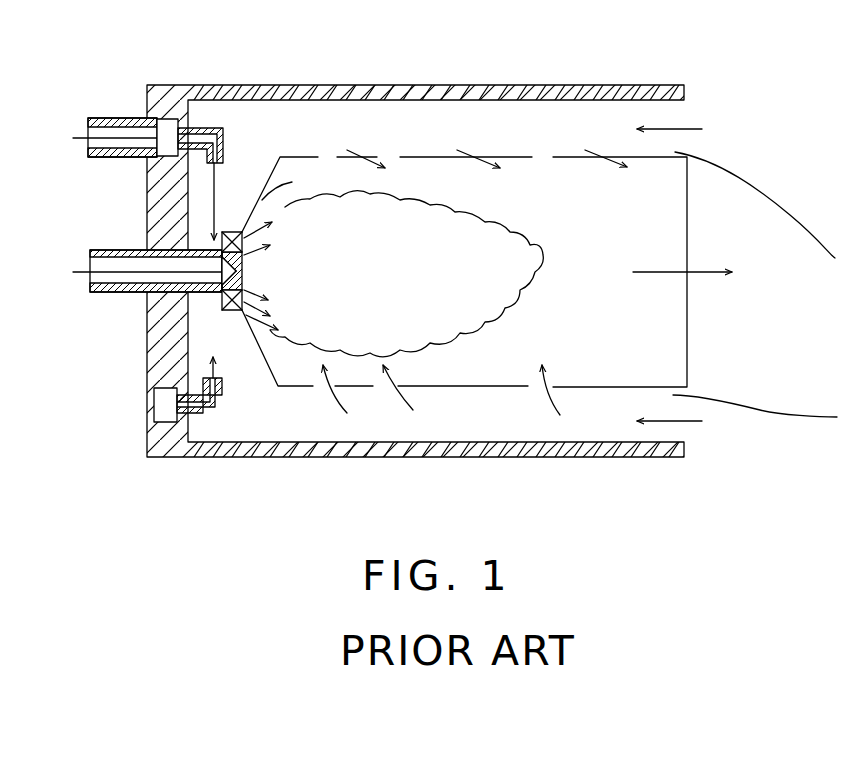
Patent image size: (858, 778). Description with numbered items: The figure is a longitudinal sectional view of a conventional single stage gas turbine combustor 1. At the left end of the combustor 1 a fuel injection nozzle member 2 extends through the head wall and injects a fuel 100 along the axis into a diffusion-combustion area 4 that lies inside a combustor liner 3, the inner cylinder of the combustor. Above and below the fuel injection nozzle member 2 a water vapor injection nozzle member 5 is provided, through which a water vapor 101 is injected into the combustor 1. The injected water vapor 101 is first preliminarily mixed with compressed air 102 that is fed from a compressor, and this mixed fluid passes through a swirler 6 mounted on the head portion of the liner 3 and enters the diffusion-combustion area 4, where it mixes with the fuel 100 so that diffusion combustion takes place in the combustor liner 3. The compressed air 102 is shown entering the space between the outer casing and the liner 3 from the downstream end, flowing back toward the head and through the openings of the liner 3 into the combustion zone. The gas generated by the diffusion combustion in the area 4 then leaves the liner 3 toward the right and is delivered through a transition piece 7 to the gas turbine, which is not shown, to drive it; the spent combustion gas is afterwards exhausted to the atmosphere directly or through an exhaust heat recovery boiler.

The gas turbine combustor 1 is at (483, 85).
The fuel injection nozzle member 2 is at (122, 292).
The combustor liner 3 is at (605, 387).
The diffusion-combustion area 4 is at (405, 288).
The water vapor injection nozzle member 5 is at (225, 140).
The swirler 6 is at (222, 296).
The transition piece 7 is at (773, 413).
The fuel 100 is at (80, 270).
The water vapor 101 is at (78, 137).
The compressed air 102 is at (688, 132).